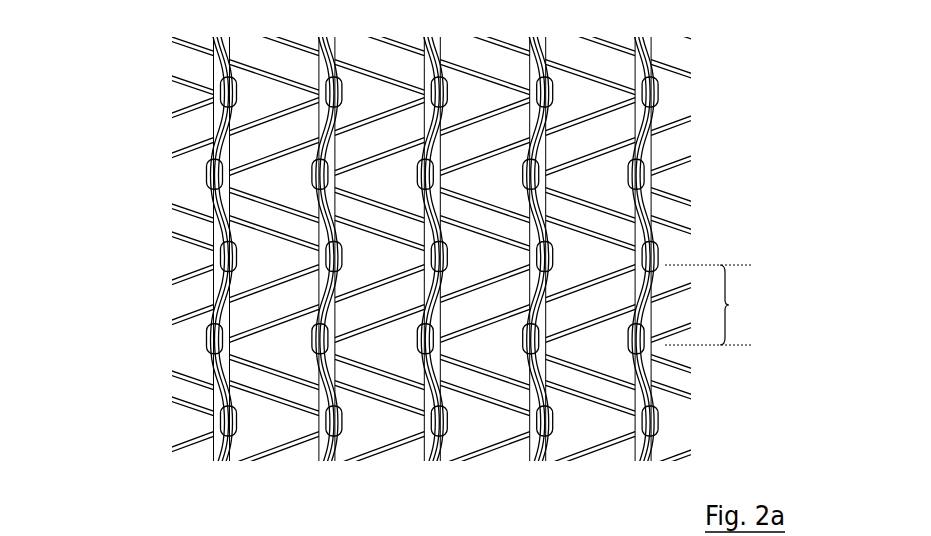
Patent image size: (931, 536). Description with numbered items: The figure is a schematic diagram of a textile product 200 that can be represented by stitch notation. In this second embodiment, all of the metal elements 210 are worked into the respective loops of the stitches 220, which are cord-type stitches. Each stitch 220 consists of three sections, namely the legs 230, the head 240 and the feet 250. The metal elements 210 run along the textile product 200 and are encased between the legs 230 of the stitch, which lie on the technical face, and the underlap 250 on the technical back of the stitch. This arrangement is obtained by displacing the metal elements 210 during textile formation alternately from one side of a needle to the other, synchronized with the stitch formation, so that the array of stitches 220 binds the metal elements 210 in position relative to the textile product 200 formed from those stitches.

The textile product 200 is at (420, 260).
The metal elements 210 is at (228, 158).
The stitches 220 is at (677, 187).
The legs 230 is at (722, 305).
The head 240 is at (674, 250).
The feet (underlap) 250 is at (681, 366).